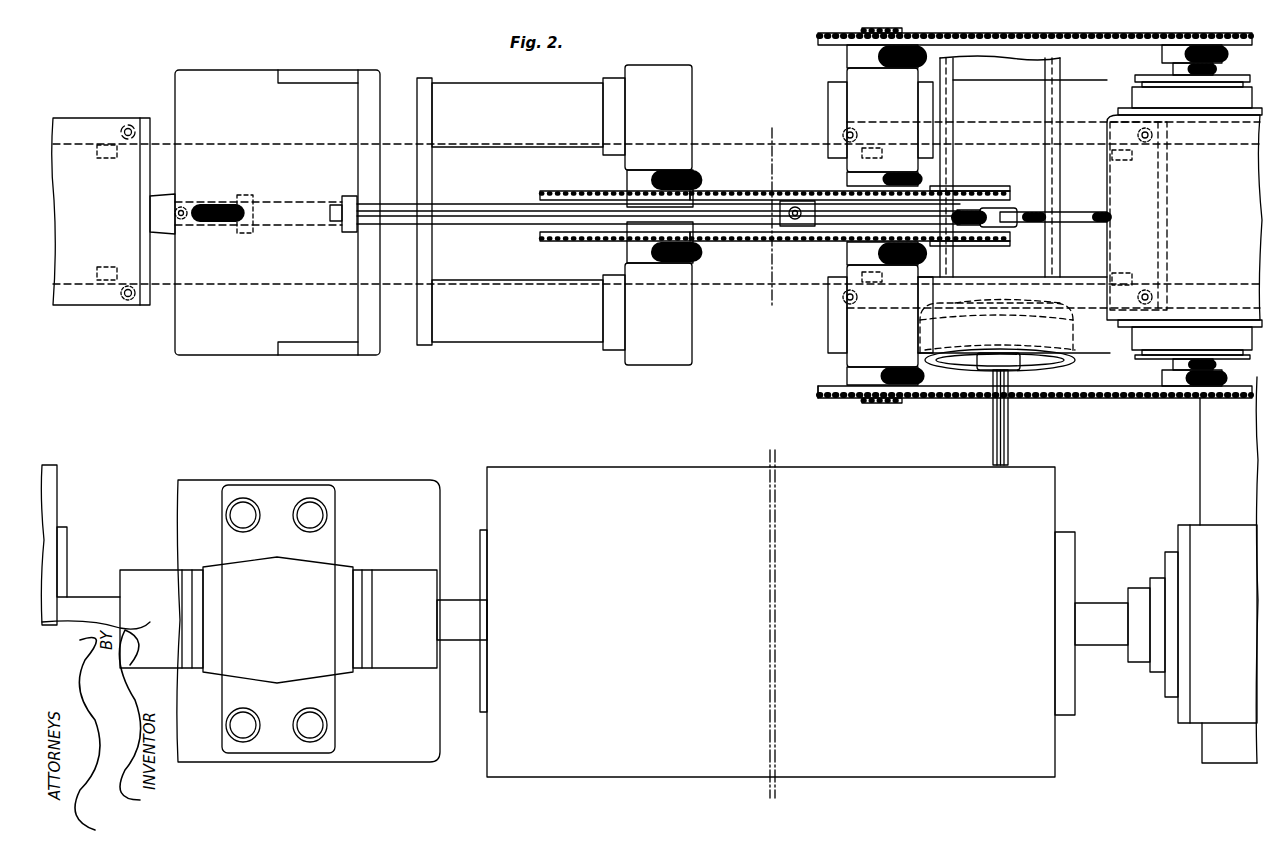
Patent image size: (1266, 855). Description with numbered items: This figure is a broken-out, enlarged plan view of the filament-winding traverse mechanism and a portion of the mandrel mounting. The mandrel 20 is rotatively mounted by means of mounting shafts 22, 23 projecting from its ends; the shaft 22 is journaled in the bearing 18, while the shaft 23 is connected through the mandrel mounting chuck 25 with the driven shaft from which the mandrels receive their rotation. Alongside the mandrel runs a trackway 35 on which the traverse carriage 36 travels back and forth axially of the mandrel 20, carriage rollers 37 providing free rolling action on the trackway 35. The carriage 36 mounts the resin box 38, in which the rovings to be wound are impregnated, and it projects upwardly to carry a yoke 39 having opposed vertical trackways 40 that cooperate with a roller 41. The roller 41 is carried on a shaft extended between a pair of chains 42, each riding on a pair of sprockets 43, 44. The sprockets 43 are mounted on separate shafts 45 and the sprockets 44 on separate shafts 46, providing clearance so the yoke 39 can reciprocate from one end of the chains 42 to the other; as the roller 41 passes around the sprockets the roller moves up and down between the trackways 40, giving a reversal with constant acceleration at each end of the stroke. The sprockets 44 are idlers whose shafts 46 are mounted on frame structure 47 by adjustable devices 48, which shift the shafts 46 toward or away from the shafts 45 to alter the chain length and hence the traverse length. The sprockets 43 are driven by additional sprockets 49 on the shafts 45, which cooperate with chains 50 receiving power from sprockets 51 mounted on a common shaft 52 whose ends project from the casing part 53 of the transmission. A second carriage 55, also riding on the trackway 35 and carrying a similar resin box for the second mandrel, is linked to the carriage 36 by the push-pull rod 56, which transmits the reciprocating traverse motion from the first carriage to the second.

The bearing 18 is at (290, 624).
The mandrel 20 is at (818, 780).
The mounting shaft 22 is at (457, 603).
The mounting shaft 23 is at (1103, 645).
The mandrel mounting chuck 25 is at (1236, 602).
The trackway 35 is at (775, 300).
The traverse carriage 36 is at (1074, 121).
The carriage rollers 37 is at (884, 157).
The resin box 38 is at (1057, 68).
The yoke 39 is at (1085, 212).
The vertical trackways 40 is at (985, 208).
The roller 41 is at (1005, 208).
The chains 42 is at (722, 190).
The sprockets 43 is at (972, 192).
The sprockets 44 is at (575, 191).
The shafts 45 is at (870, 27).
The shafts 46 is at (692, 200).
The frame structure 47 is at (366, 70).
The adjustable devices 48 is at (530, 72).
The sprockets 49 is at (842, 400).
The chains 50 is at (1043, 33).
The sprockets 51 is at (1226, 400).
The common shaft 52 is at (1213, 69).
The casing part 53 is at (1240, 266).
The carriage 55 is at (98, 312).
The push-pull rod 56 is at (476, 206).